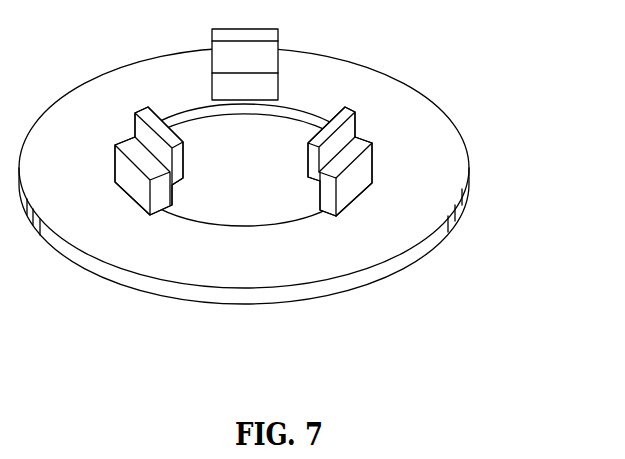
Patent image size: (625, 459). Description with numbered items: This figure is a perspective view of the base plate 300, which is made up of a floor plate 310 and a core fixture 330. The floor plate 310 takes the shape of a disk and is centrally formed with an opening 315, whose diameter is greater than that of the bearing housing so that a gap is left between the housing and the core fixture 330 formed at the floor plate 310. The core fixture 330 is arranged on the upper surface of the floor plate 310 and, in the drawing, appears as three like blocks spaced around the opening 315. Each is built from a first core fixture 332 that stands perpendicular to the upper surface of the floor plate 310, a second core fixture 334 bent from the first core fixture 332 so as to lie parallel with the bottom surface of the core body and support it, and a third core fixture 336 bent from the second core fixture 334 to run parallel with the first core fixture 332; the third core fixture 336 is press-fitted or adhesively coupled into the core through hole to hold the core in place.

The base plate 300 is at (289, 202).
The floor plate 310 is at (438, 180).
The opening 315 is at (218, 162).
The core fixture 330 is at (255, 202).
The first core fixture 332 is at (338, 180).
The second core fixture 334 is at (323, 165).
The third core fixture 336 is at (313, 157).